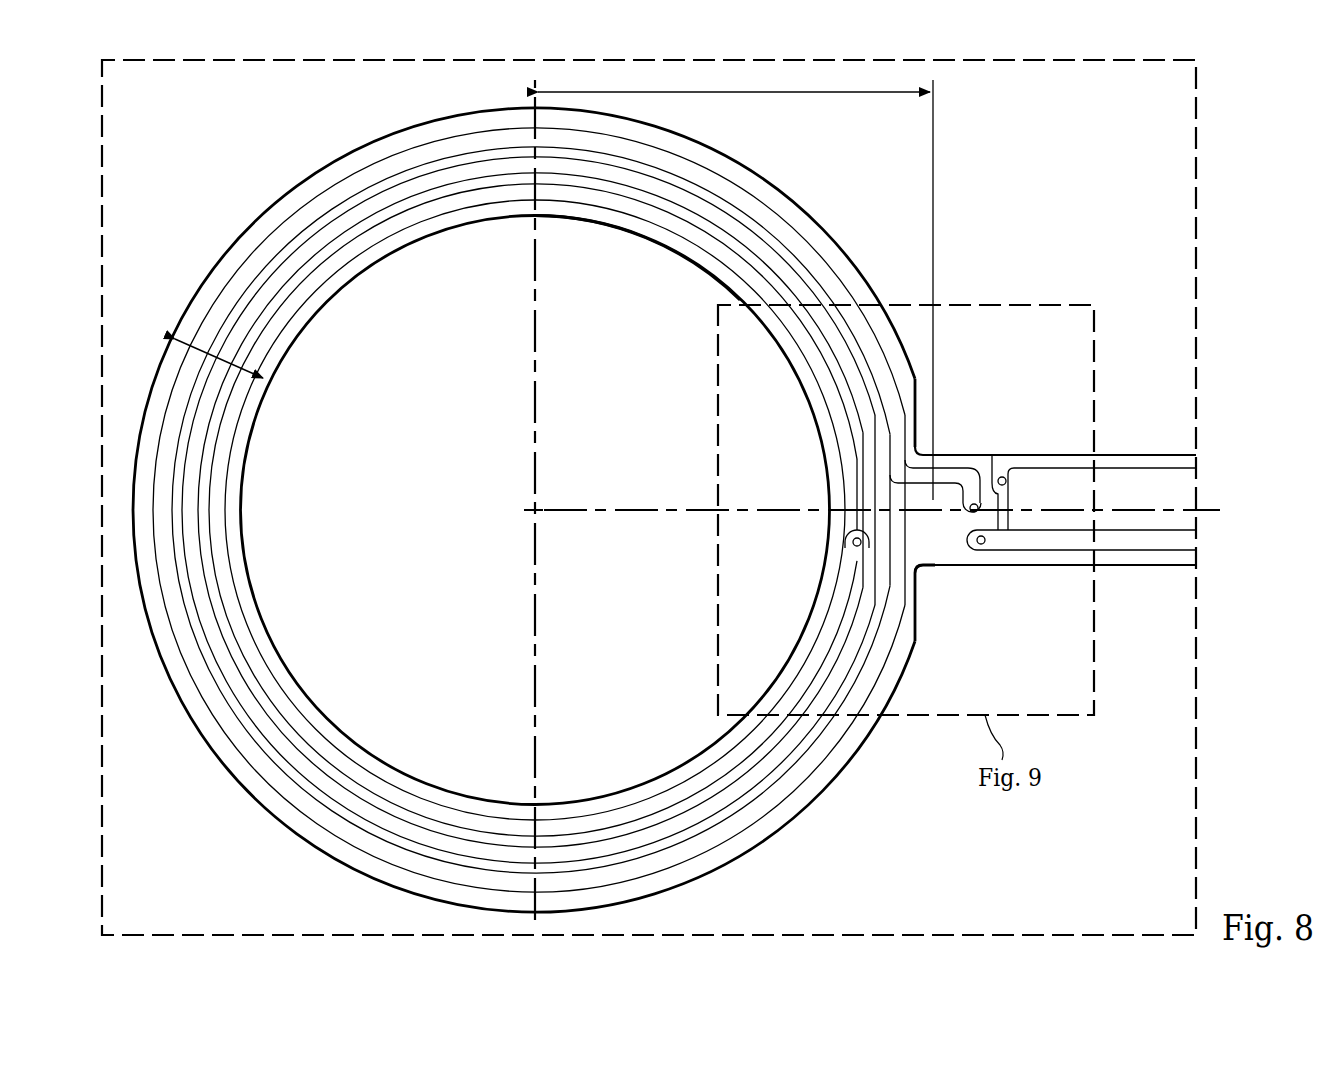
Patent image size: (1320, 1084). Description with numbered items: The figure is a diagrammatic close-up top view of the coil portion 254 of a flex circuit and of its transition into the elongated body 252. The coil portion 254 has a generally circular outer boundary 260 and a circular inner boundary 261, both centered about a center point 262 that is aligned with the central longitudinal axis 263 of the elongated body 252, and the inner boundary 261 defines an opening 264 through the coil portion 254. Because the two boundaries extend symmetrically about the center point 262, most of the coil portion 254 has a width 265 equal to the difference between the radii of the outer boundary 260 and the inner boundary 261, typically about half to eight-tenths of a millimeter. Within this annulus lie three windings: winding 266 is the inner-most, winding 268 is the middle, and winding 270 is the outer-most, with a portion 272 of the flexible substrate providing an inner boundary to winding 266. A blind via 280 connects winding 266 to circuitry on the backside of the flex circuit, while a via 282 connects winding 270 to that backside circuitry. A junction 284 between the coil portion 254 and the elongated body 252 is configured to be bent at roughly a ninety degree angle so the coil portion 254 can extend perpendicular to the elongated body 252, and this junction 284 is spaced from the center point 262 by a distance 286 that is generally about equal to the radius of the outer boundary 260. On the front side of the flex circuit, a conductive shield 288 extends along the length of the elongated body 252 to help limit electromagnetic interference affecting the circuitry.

The elongated body 252 is at (1128, 452).
The coil portion 254 is at (282, 196).
The outer boundary 260 is at (232, 790).
The inner boundary 261 is at (336, 290).
The center point 262 is at (535, 518).
The central longitudinal axis 263 is at (650, 509).
The opening 264 is at (437, 668).
The width 265 is at (200, 355).
The winding 266 is at (636, 806).
The winding 268 is at (850, 406).
The winding 270 is at (346, 848).
The portion 272 is at (618, 226).
The blind via 280 is at (852, 541).
The via 282 is at (968, 516).
The junction 284 is at (930, 575).
The distance 286 is at (823, 94).
The shield 288 is at (1145, 556).